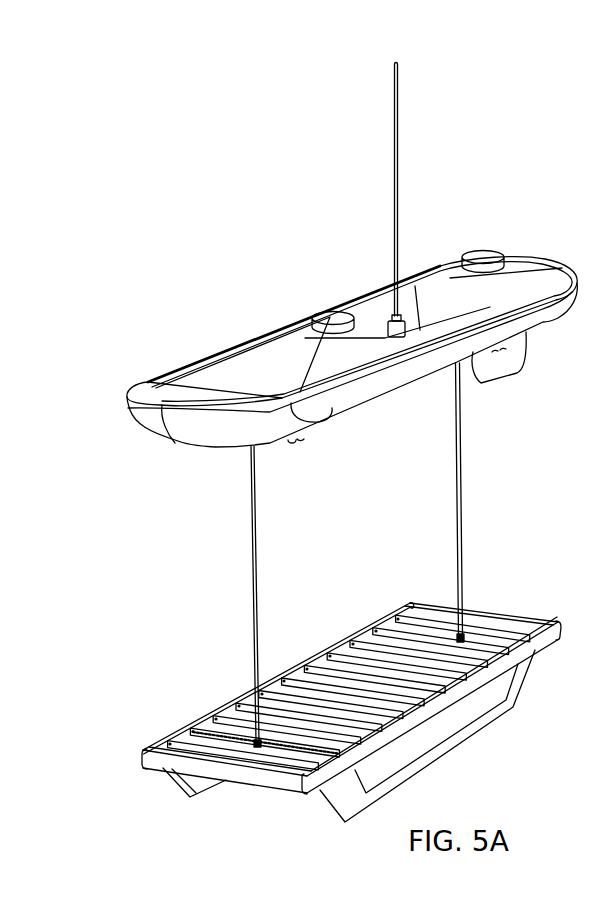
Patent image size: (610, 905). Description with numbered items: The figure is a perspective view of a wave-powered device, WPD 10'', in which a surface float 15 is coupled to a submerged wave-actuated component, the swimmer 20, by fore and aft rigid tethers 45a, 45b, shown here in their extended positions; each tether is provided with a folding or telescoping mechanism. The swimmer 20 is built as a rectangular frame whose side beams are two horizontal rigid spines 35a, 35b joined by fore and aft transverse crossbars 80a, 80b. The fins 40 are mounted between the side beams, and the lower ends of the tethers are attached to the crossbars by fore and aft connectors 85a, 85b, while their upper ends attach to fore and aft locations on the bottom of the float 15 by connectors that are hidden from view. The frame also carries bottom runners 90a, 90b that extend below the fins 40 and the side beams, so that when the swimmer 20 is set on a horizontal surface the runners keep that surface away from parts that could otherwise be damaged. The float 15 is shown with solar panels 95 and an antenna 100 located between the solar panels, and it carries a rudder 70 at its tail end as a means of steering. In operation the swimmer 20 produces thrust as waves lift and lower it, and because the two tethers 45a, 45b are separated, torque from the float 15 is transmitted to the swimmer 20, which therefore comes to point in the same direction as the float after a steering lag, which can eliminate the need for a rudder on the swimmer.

The WPD 10'' is at (92, 810).
The float 15 is at (546, 261).
The swimmer 20 is at (155, 738).
The rigid spine 35a is at (553, 634).
The rigid spine 35b is at (378, 621).
The fins 40 is at (333, 662).
The fore rigid tether 45a is at (259, 544).
The aft rigid tether 45b is at (464, 498).
The rudder 70 is at (520, 364).
The fore transverse crossbar 80a is at (207, 735).
The aft transverse crossbar 80b is at (430, 633).
The fore connector 85a is at (261, 752).
The aft connector 85b is at (466, 635).
The bottom runner 90a is at (343, 803).
The bottom runner 90b is at (190, 792).
The solar panels 95 is at (262, 352).
The antenna 100 is at (399, 191).